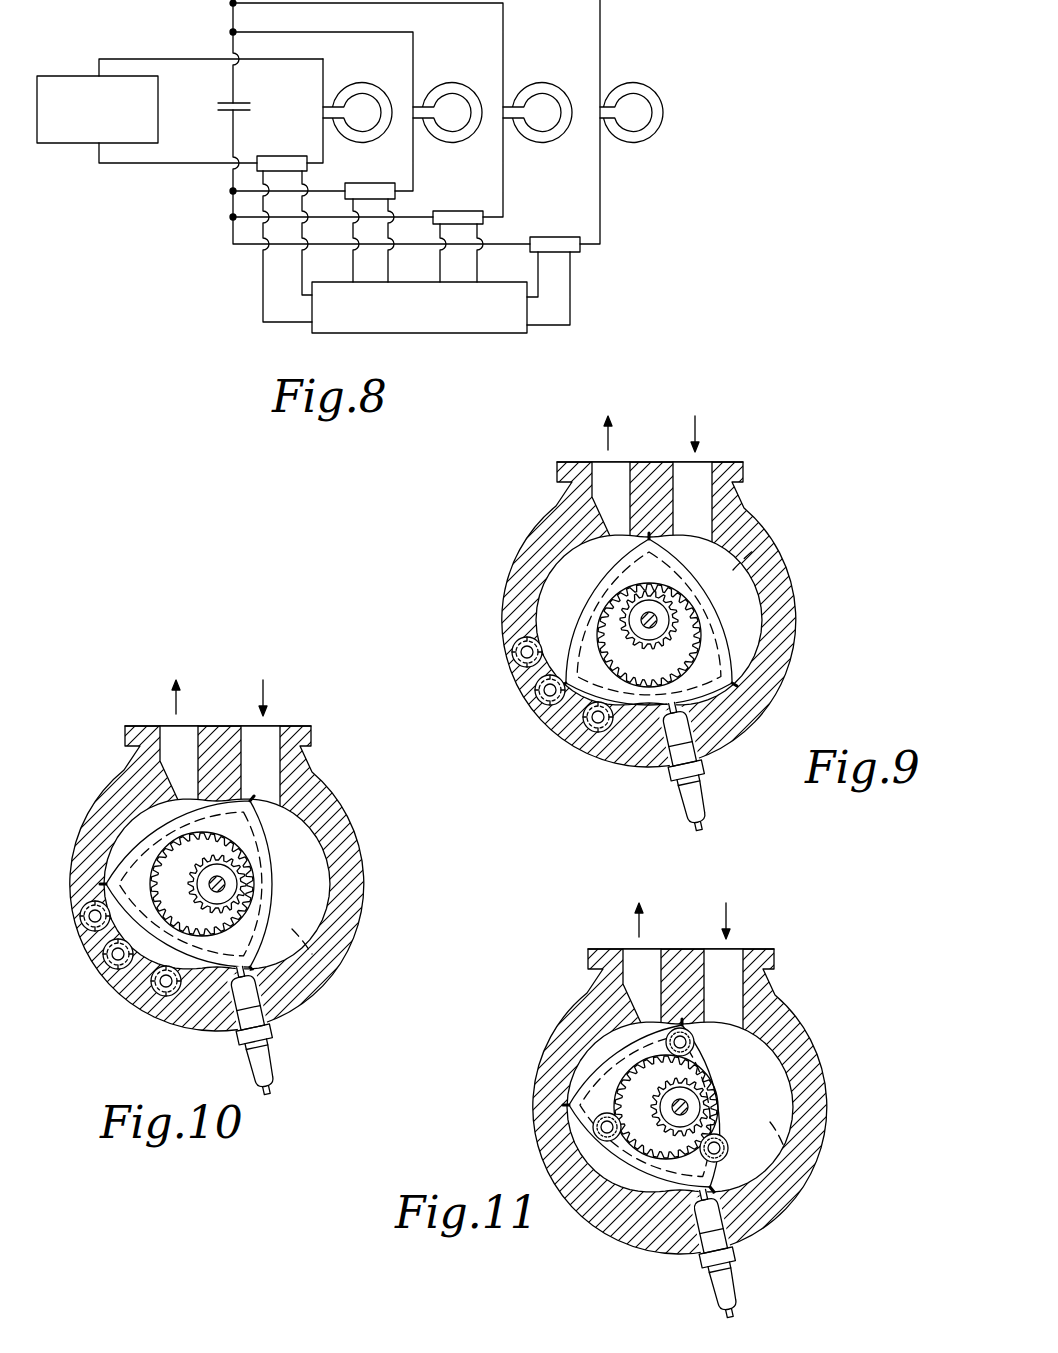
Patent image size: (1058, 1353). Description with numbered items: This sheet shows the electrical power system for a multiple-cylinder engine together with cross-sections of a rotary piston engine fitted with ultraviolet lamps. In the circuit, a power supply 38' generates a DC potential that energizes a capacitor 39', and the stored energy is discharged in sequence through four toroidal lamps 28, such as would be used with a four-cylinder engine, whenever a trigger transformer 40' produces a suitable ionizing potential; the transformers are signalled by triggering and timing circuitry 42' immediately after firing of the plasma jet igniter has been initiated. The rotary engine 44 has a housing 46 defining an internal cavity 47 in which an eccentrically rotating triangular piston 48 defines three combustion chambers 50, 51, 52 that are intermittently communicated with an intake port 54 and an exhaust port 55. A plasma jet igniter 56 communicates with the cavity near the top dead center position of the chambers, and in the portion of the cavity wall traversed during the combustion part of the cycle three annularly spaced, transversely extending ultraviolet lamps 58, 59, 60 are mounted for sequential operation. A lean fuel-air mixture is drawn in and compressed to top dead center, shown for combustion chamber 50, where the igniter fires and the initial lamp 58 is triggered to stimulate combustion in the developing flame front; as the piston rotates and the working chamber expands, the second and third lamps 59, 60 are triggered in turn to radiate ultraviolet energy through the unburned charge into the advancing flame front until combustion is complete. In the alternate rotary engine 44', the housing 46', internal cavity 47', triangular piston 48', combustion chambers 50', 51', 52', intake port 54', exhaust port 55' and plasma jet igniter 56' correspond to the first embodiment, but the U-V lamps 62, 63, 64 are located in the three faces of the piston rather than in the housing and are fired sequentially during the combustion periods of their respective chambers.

In FIG. 8, the toroidal lamp 28 is at (386, 93).
In FIG. 8, the power supply 38' is at (180, 87).
In FIG. 8, the capacitor 39' is at (216, 125).
In FIG. 8, the trigger transformer 40' is at (418, 224).
In FIG. 8, the triggering and timing circuitry 42' is at (419, 329).
In FIG. 9, the rotary engine 44 is at (688, 532).
In FIG. 10, the rotary engine 44 is at (247, 796).
In FIG. 11, the rotary engine 44' is at (717, 1019).
In FIG. 9, the housing 46 is at (668, 614).
In FIG. 10, the housing 46 is at (235, 878).
In FIG. 11, the housing 46' is at (693, 1101).
In FIG. 9, the internal cavity 47 is at (707, 622).
In FIG. 10, the internal cavity 47 is at (257, 884).
In FIG. 11, the internal cavity 47' is at (720, 1106).
In FIG. 9, the triangular piston 48 is at (696, 609).
In FIG. 10, the triangular piston 48 is at (141, 884).
In FIG. 11, the triangular piston 48' is at (597, 1105).
In FIG. 9, the combustion chamber 50 is at (658, 644).
In FIG. 10, the combustion chamber 50 is at (185, 885).
In FIG. 11, the combustion chamber 50' is at (680, 1157).
In FIG. 9, the combustion chamber 51 is at (589, 623).
In FIG. 10, the combustion chamber 51 is at (161, 868).
In FIG. 11, the combustion chamber 51' is at (601, 1103).
In FIG. 9, the combustion chamber 52 is at (779, 560).
In FIG. 10, the combustion chamber 52 is at (341, 947).
In FIG. 11, the combustion chamber 52' is at (832, 1123).
In FIG. 9, the intake port 54 is at (708, 484).
In FIG. 10, the intake port 54 is at (278, 743).
In FIG. 11, the intake port 54' is at (745, 967).
In FIG. 9, the exhaust port 55 is at (626, 484).
In FIG. 10, the exhaust port 55 is at (192, 740).
In FIG. 11, the exhaust port 55' is at (661, 970).
In FIG. 9, the plasma jet igniter 56 is at (708, 765).
In FIG. 10, the plasma jet igniter 56 is at (274, 1029).
In FIG. 11, the plasma jet igniter 56' is at (741, 1252).
In FIG. 9, the ultraviolet lamp 58 is at (573, 745).
In FIG. 10, the ultraviolet lamp 58 is at (150, 1015).
In FIG. 9, the ultraviolet lamp 59 is at (519, 706).
In FIG. 10, the ultraviolet lamp 59 is at (93, 983).
In FIG. 9, the ultraviolet lamp 60 is at (497, 656).
In FIG. 10, the ultraviolet lamp 60 is at (70, 916).
In FIG. 11, the U-V lamp 62 is at (545, 1137).
In FIG. 11, the U-V lamp 63 is at (717, 1061).
In FIG. 11, the U-V lamp 64 is at (775, 1163).